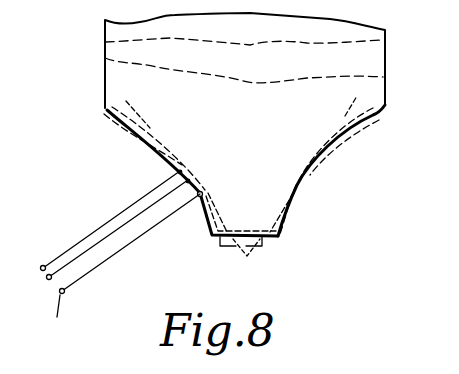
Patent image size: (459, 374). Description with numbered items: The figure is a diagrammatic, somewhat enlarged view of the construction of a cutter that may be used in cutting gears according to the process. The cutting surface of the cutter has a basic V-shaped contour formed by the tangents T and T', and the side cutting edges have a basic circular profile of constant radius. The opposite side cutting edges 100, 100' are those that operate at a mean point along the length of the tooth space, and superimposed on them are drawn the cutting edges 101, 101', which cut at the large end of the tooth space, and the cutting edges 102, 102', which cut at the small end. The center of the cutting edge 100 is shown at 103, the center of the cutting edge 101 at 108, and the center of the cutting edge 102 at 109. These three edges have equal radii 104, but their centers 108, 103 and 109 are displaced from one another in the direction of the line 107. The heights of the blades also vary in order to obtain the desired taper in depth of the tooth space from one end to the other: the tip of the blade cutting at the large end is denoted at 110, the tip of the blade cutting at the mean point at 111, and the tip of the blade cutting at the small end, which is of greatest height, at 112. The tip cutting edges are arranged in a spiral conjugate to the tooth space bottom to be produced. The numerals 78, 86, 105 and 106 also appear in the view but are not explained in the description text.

The dispensing opening / valve member 78 is at (249, 256).
The link pivot 86 is at (190, 181).
The side cutting edge 100 is at (150, 151).
The opposite side cutting edge 100' is at (331, 170).
The cutting edge 101 is at (155, 135).
The cutting edge 101' is at (326, 143).
The cutting edge 102 is at (130, 139).
The cutting edge 102' is at (350, 147).
The center of cutting edge 103 is at (48, 280).
The radius 104 is at (139, 202).
The pivot on hopper wall 105 is at (203, 194).
The link attachment 106 is at (181, 170).
The line 107 is at (65, 294).
The center of cutting edge 108 is at (43, 265).
The center of cutting edge 109 is at (55, 316).
The tip of cutting blade 110 is at (274, 237).
The tip of blade 111 is at (258, 244).
The tip of blade 112 is at (228, 246).
The tangent T is at (151, 114).
The tangent T' is at (336, 105).